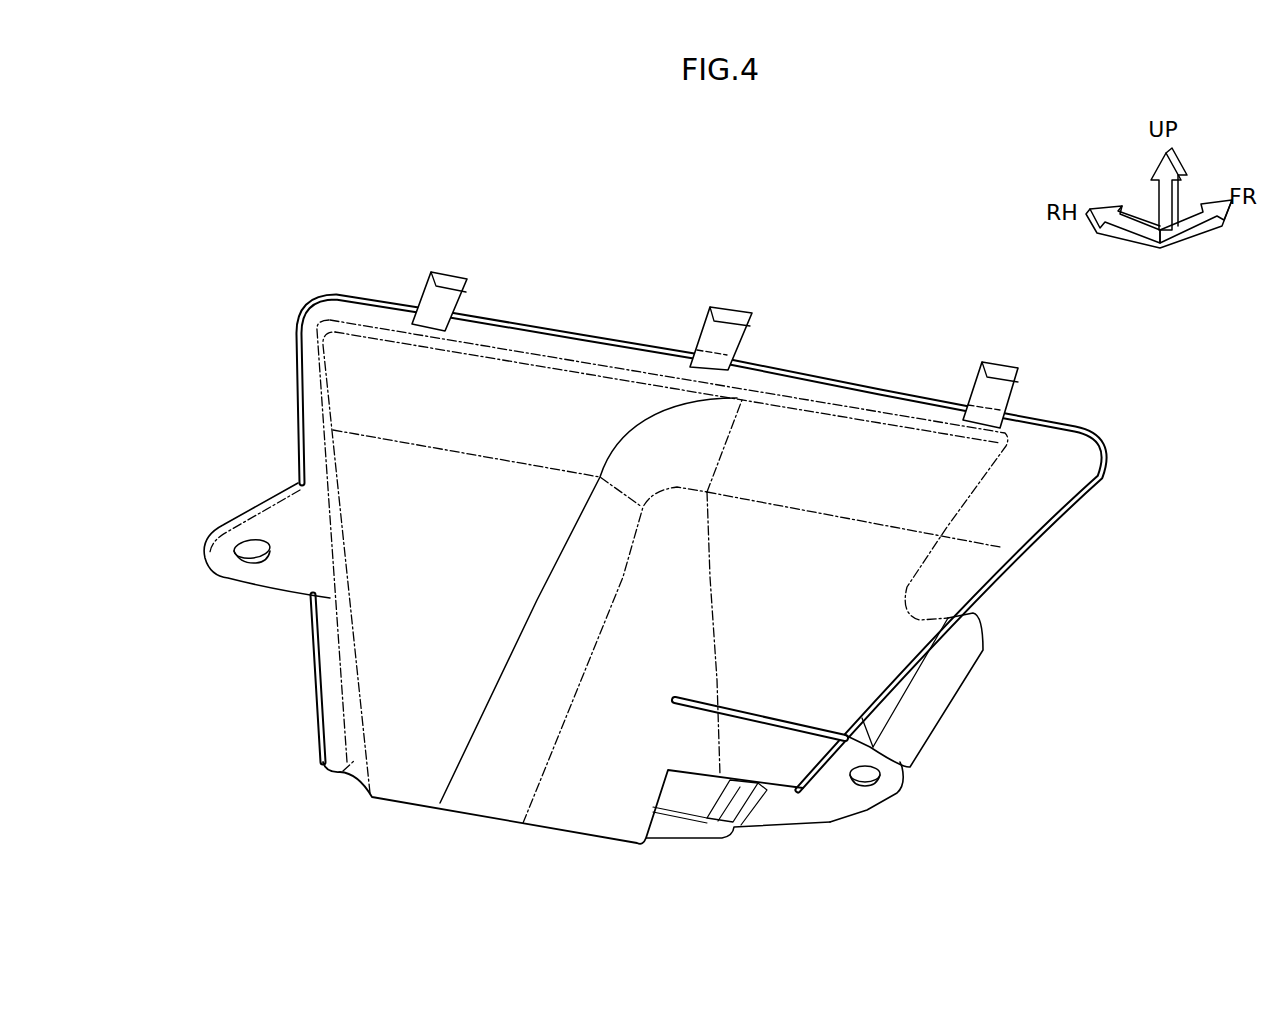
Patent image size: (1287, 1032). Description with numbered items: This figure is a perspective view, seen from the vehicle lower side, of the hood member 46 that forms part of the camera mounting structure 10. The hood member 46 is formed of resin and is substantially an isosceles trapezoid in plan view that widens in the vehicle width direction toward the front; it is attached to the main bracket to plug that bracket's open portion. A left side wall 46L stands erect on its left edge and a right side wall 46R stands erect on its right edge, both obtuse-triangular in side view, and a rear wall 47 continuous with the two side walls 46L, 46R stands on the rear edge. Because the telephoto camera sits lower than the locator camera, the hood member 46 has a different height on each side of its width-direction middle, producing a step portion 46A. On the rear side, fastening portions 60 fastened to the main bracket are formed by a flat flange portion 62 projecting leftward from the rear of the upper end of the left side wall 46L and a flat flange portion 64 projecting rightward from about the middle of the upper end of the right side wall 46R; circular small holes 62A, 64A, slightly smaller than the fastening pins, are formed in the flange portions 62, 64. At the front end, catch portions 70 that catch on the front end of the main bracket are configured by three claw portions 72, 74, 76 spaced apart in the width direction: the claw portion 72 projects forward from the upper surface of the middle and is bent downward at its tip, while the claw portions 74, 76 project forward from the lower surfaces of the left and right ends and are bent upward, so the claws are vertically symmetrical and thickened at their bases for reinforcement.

The vehicle front structure 10 is at (867, 300).
The hood member 46 is at (296, 306).
The step portion 46A is at (645, 645).
The left side wall 46L is at (897, 678).
The right side wall 46R is at (358, 760).
The rear wall 47 is at (489, 823).
The fastening portions 60 is at (213, 577).
The flange portion 62 is at (829, 805).
The small hole 62A is at (870, 785).
The flange portion 64 is at (285, 580).
The small hole 64A is at (250, 560).
The catch portions 70 is at (455, 265).
The claw portion 72 is at (717, 335).
The claw portion 74 is at (1005, 397).
The claw portion 76 is at (437, 295).